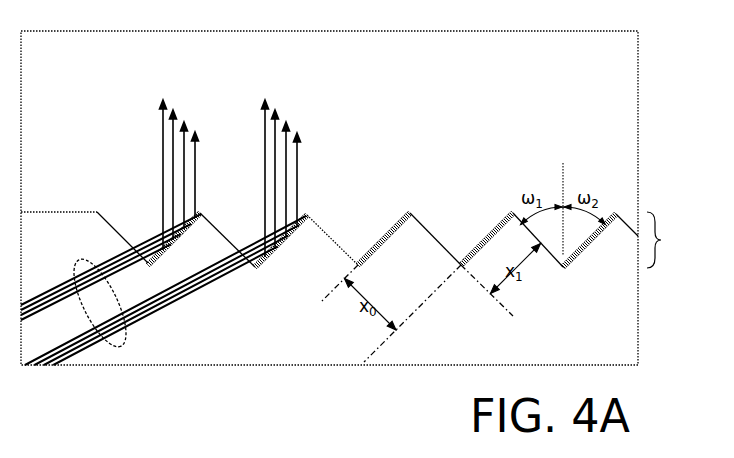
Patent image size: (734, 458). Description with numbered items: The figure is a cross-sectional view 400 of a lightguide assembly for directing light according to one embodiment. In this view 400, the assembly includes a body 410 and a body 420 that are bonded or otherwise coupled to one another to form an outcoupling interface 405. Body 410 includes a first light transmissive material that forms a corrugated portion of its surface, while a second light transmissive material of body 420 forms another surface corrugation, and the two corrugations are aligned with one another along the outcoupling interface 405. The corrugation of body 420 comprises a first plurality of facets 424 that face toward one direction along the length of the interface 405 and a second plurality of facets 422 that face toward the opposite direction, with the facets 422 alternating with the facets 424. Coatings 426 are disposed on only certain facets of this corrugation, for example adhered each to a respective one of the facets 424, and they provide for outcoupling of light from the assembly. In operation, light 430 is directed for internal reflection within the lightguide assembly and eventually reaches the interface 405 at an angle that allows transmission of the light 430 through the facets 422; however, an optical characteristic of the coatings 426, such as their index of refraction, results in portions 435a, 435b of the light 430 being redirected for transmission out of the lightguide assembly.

The cross-sectional view 400 is at (65, 28).
The outcoupling interface 405 is at (705, 252).
The body 410 is at (620, 60).
The body 420 is at (620, 358).
The second plurality of facets 422 is at (104, 230).
The first plurality of facets 424 is at (194, 242).
The coatings 426 is at (316, 205).
The light 430 is at (132, 343).
The portion of light 435a is at (206, 80).
The portion of light 435b is at (306, 80).